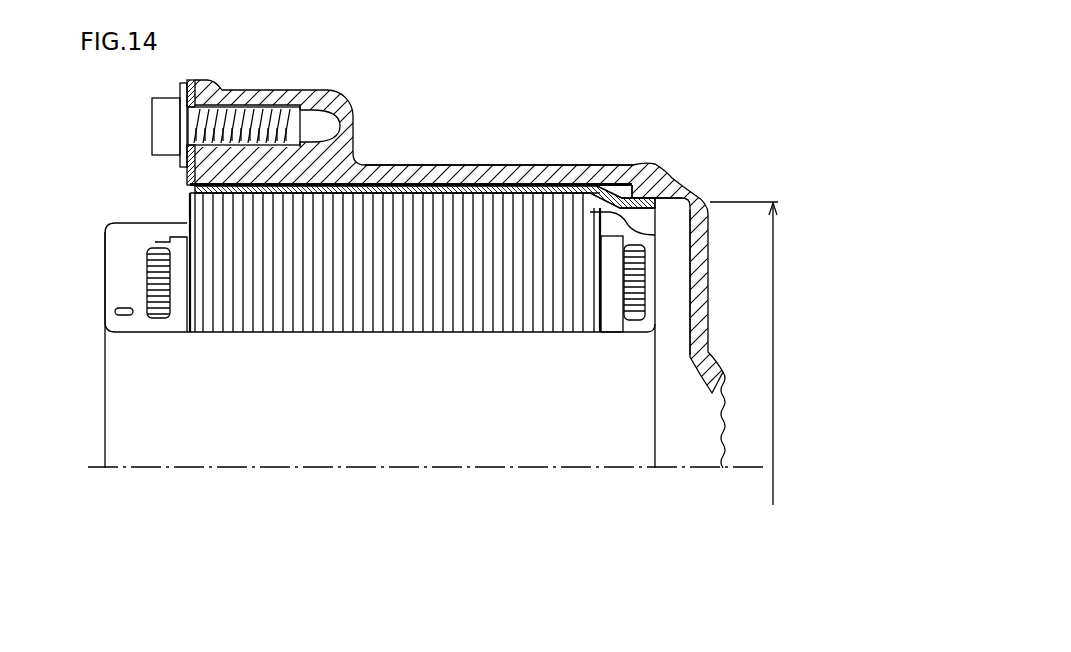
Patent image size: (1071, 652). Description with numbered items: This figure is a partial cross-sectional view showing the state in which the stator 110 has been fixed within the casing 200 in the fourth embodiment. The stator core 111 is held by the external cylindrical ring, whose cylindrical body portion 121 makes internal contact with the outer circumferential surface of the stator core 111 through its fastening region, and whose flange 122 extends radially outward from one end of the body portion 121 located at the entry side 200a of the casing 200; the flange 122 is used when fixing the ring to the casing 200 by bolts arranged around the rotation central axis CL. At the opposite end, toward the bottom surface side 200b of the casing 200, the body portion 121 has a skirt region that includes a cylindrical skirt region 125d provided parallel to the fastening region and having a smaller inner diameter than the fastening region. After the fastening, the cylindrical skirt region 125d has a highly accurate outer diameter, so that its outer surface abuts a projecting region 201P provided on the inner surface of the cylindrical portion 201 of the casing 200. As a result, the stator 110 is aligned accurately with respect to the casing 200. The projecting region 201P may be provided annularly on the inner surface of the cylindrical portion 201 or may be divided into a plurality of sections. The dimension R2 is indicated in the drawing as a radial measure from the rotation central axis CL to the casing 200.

The casing 200 is at (318, 98).
The entry side of casing 200a is at (195, 400).
The bottom surface side of casing 200b is at (690, 266).
The cylindrical portion of casing 201 is at (492, 178).
The projecting region 201P is at (625, 190).
The cylindrical skirt region 125d is at (655, 195).
The flange 122 is at (186, 181).
The cylindrical body portion 121 is at (425, 183).
The stator 110 is at (126, 189).
The stator core 111 is at (410, 335).
The rotation central axis CL is at (338, 472).
The radius R2 is at (756, 353).